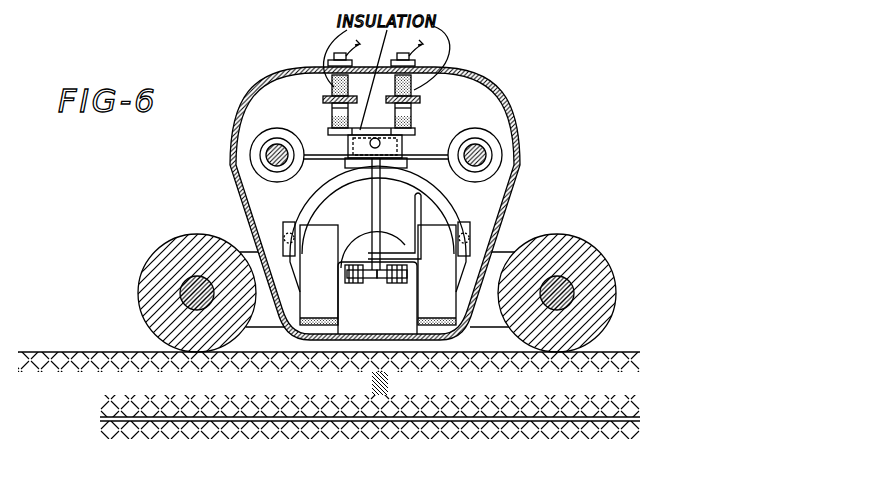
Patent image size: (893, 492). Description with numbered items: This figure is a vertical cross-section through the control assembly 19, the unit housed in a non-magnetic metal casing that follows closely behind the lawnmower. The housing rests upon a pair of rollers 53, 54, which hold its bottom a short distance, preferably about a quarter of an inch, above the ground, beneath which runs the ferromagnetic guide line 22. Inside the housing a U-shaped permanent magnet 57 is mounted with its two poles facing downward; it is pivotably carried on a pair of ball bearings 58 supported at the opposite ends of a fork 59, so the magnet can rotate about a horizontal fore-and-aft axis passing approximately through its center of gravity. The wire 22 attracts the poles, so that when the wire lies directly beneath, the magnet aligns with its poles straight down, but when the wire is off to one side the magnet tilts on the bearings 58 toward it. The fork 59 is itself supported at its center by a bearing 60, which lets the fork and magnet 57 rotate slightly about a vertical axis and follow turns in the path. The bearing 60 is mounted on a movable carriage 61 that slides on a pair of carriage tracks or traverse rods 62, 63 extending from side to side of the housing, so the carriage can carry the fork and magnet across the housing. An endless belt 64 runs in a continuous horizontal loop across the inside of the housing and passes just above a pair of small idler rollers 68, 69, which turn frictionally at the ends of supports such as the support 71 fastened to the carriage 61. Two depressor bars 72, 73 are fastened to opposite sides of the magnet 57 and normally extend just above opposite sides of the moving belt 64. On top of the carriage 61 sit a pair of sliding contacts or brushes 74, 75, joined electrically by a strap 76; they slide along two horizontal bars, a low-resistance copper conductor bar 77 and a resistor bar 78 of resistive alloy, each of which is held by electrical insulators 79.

The control assembly 19 is at (229, 157).
The ferromagnetic guide line 22 is at (318, 421).
The roller 53 is at (170, 236).
The roller 54 is at (577, 234).
The U-shaped permanent magnet 57 is at (339, 310).
The ball bearing 58 is at (283, 236).
The fork 59 is at (297, 201).
The bearing 60 is at (390, 147).
The movable carriage 61 is at (298, 138).
The carriage track 62 is at (271, 147).
The carriage track 63 is at (474, 142).
The endless belt 64 is at (355, 264).
The idler roller 68 is at (345, 278).
The idler roller 69 is at (400, 281).
The support 71 is at (372, 198).
The depressor bar 72 is at (375, 232).
The depressor bar 73 is at (421, 255).
The brush 74 is at (332, 126).
The brush 75 is at (412, 117).
The strap 76 is at (376, 132).
The conductor bar 77 is at (323, 103).
The resistor bar 78 is at (424, 100).
The electrical insulator 79 is at (332, 88).